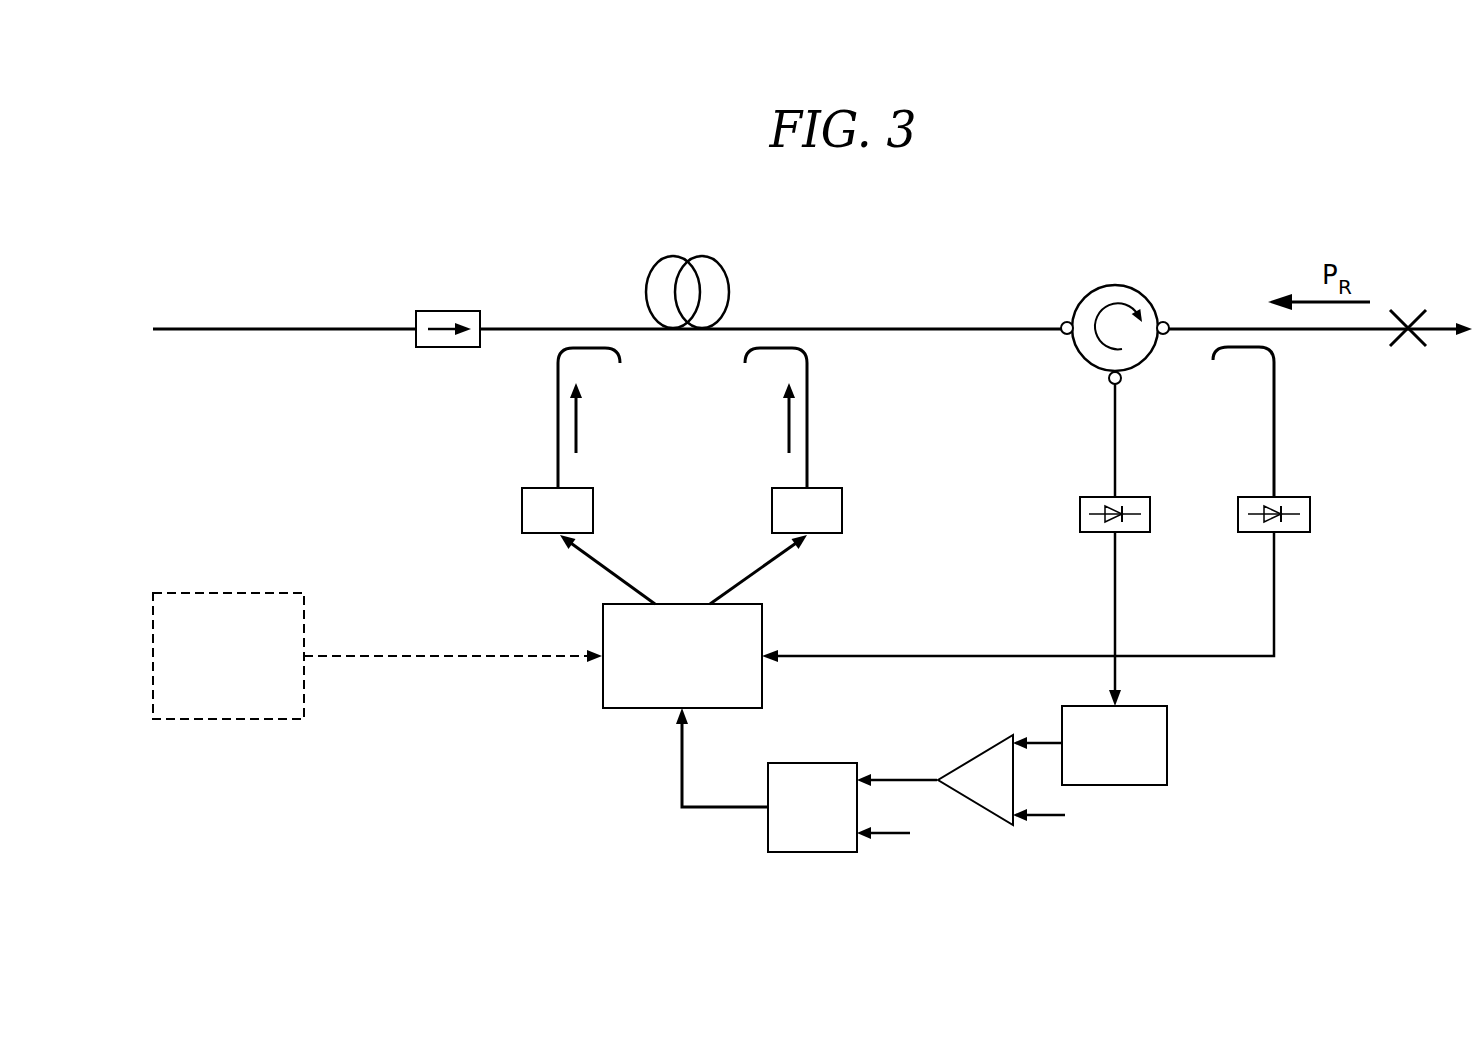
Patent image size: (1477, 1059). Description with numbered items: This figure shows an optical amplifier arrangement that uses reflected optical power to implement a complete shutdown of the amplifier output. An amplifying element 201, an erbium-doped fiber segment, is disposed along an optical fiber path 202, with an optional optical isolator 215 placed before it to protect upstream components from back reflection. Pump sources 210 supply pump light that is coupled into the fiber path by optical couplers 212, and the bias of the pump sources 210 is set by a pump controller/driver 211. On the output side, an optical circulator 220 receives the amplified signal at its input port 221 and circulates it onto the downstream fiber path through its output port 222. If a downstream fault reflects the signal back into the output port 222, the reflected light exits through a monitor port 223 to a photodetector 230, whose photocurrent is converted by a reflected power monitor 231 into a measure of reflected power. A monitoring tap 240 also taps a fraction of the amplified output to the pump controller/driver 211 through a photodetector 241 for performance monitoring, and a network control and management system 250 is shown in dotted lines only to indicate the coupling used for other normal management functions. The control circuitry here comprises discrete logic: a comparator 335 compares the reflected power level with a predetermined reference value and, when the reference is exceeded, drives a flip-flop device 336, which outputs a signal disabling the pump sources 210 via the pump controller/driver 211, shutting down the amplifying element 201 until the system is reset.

The amplifying element 201 is at (730, 276).
The optical fiber path 202 is at (285, 326).
The pump sources 210 is at (521, 505).
The pump controller/driver 211 is at (763, 628).
The optical couplers 212 is at (556, 422).
The optical isolator 215 is at (450, 310).
The optical circulator 220 is at (1115, 285).
The input port 221 is at (1063, 321).
The output port 222 is at (1168, 320).
The monitor port 223 is at (1110, 384).
The photodetector 230 is at (1079, 513).
The reflected power monitor 231 is at (1168, 748).
The monitoring tap 240 is at (1243, 353).
The photodetector 241 is at (1311, 513).
The network control and management system 250 is at (228, 722).
The comparator 335 is at (990, 756).
The flip-flop device 336 is at (812, 763).